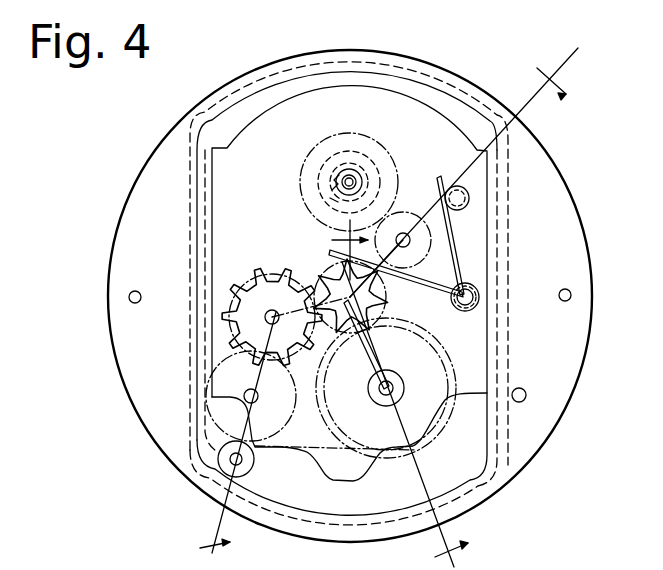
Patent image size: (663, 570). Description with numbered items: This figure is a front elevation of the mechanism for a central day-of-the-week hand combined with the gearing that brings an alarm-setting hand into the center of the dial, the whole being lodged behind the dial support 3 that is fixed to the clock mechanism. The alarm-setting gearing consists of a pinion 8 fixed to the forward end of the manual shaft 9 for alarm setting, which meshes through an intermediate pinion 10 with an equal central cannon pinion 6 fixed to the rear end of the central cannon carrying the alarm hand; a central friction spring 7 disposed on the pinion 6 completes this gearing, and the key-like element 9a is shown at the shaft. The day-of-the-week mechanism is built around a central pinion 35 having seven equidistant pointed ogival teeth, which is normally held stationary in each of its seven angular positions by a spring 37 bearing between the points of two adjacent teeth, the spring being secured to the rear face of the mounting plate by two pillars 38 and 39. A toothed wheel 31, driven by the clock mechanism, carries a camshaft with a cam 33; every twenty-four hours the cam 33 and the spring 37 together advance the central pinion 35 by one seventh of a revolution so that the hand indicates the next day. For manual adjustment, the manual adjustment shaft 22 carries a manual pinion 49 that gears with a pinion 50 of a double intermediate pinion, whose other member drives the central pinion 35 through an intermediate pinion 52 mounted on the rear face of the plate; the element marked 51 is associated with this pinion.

The dial support 3 is at (122, 214).
The central cannon pinion for alarm setting 6 is at (328, 248).
The spring 7 is at (279, 387).
The pinion 8 is at (362, 152).
The manual shaft for alarm setting 9 is at (345, 176).
The key 9a is at (322, 187).
The intermediate pinion 10 is at (403, 240).
The manual adjustment shaft 22 is at (233, 460).
The toothed wheel 31 is at (396, 379).
The cam 33 is at (413, 330).
The central pinion 35 is at (326, 270).
The spring 37 is at (462, 246).
The pillar 38 is at (478, 292).
The pillar 39 is at (467, 196).
The manual pinion 49 is at (218, 455).
The pinion 50 is at (222, 362).
The gear hub 51 is at (227, 266).
The intermediate pinion 52 is at (262, 266).